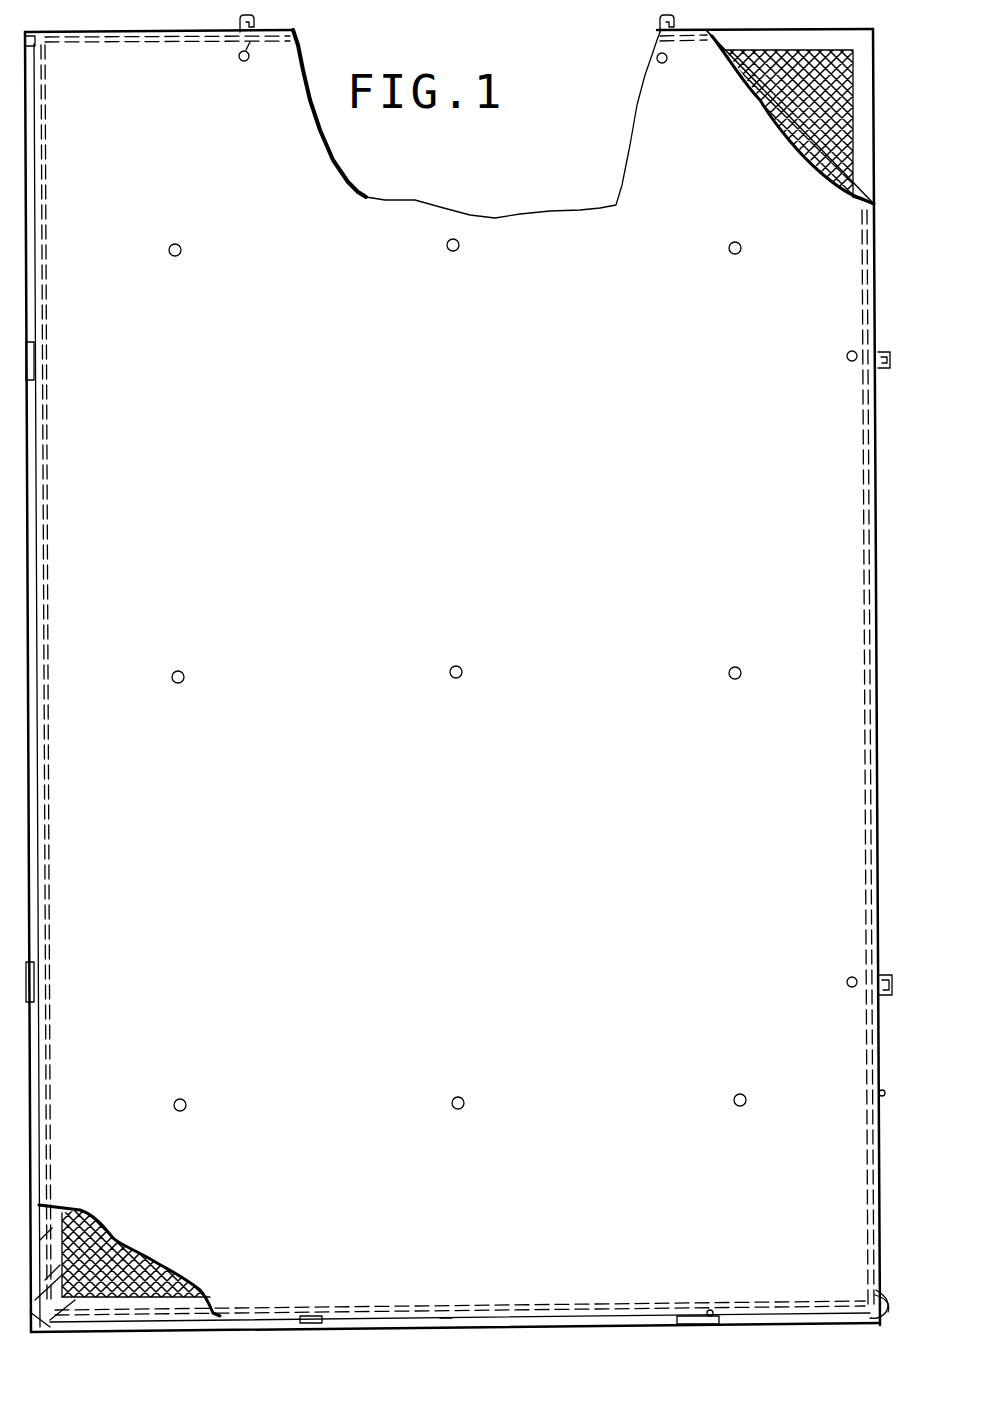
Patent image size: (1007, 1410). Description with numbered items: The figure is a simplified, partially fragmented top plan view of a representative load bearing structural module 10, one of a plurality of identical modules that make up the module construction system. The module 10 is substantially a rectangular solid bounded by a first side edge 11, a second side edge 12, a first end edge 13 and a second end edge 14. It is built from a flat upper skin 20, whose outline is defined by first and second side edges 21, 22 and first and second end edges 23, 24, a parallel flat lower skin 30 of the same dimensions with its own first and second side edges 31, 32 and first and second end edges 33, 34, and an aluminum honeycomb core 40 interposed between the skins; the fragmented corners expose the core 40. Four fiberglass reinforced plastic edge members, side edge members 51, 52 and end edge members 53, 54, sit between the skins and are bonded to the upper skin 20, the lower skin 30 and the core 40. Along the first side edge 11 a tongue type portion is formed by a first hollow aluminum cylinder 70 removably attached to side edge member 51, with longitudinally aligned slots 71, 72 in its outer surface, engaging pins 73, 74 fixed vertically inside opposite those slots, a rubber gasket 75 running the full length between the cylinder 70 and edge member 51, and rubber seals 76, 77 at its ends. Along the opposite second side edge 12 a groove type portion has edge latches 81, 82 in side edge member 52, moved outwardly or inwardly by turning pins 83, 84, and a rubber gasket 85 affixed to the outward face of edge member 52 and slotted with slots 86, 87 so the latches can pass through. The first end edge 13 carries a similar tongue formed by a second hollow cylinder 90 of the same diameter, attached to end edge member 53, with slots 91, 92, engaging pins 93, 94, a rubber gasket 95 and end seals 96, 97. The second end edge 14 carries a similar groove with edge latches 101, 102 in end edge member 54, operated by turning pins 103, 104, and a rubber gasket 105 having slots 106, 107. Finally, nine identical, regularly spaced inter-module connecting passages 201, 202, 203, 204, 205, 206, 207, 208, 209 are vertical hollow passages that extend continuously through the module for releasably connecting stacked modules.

The structural module 10 is at (600, 79).
The first side edge 11 is at (37, 690).
The second side edge 12 is at (885, 755).
The first end edge 13 is at (558, 1318).
The second end edge 14 is at (290, 30).
The flat upper skin 20 is at (472, 438).
The first side edge 21 is at (40, 825).
The second side edge 22 is at (880, 1092).
The first end edge 23 is at (625, 1315).
The second end edge 24 is at (138, 35).
The flat lower skin 30 is at (838, 38).
The first side edge 31 is at (30, 590).
The second side edge 32 is at (877, 137).
The first end edge 33 is at (745, 1312).
The second end edge 34 is at (722, 30).
The aluminum honeycomb core 40 is at (770, 110).
The side edge member 51 is at (80, 1195).
The side edge member 52 is at (830, 175).
The end edge member 53 is at (205, 1304).
The end edge member 54 is at (760, 80).
The first hollow aluminum cylinder 70 is at (36, 530).
The slot 71 is at (32, 965).
The slot 72 is at (32, 352).
The engaging pin 73 is at (35, 990).
The engaging pin 74 is at (35, 372).
The rubber gasket 75 is at (45, 172).
The rubber seal 76 is at (75, 1225).
The rubber seal 77 is at (33, 42).
The edge latch 81 is at (892, 975).
The edge latch 82 is at (884, 362).
The turning pin 83 is at (847, 983).
The turning pin 84 is at (846, 358).
The rubber gasket 85 is at (870, 195).
The slot 86 is at (867, 995).
The slot 87 is at (865, 372).
The second hollow aluminum cylinder 90 is at (448, 1318).
The slot 91 is at (300, 1318).
The slot 92 is at (670, 1323).
The engaging pin 93 is at (320, 1318).
The engaging pin 94 is at (710, 1310).
The rubber gasket 95 is at (778, 1302).
The rubber seal 96 is at (115, 1245).
The rubber seal 97 is at (880, 1292).
The edge latch 101 is at (240, 20).
The edge latch 102 is at (674, 20).
The turning pin 103 is at (241, 61).
The turning pin 104 is at (662, 65).
The rubber gasket 105 is at (790, 35).
The slot 106 is at (250, 60).
The slot 107 is at (680, 65).
The inter-module connecting passage 201 is at (739, 254).
The inter-module connecting passage 202 is at (739, 679).
The inter-module connecting passage 203 is at (744, 1106).
The inter-module connecting passage 204 is at (457, 251).
The inter-module connecting passage 205 is at (460, 678).
The inter-module connecting passage 206 is at (462, 1109).
The inter-module connecting passage 207 is at (179, 256).
The inter-module connecting passage 208 is at (182, 683).
The inter-module connecting passage 209 is at (184, 1111).